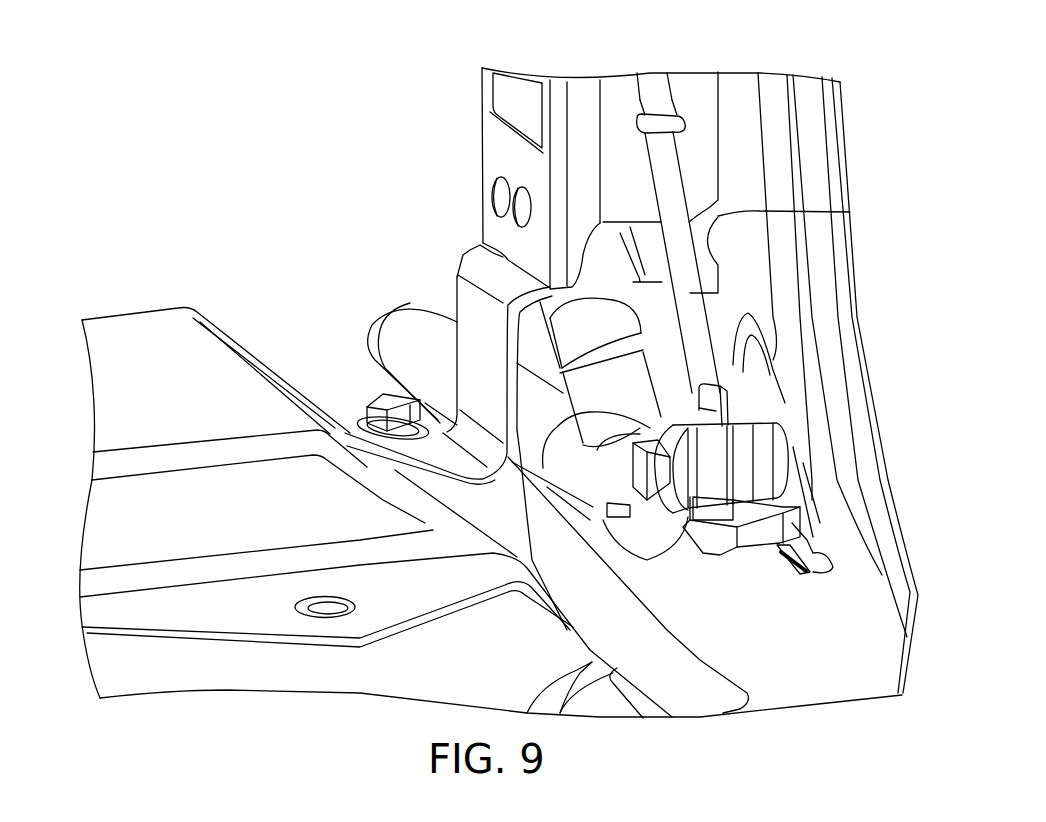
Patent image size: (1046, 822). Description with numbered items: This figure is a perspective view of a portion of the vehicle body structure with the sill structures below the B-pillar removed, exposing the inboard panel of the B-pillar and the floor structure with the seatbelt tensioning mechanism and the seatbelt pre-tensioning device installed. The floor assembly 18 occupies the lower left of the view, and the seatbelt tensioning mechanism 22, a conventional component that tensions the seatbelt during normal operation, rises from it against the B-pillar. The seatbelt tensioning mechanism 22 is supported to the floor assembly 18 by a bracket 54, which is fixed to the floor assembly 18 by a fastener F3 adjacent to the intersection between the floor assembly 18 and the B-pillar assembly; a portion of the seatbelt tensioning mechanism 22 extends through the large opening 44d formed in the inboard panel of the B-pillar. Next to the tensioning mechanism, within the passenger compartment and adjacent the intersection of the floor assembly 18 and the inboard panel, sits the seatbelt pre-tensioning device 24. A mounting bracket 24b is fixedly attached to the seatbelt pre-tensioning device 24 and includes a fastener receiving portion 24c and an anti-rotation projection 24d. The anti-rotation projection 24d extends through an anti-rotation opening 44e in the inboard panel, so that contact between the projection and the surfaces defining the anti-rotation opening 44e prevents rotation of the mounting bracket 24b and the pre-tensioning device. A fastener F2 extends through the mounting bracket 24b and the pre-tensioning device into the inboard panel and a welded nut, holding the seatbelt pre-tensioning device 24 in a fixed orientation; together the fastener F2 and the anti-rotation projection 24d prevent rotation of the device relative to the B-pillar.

The floor assembly 18 is at (143, 352).
The seatbelt tensioning mechanism 22 is at (693, 92).
The seatbelt pre-tensioning device 24 is at (403, 330).
The bracket 54 is at (480, 373).
The fastener F3 is at (387, 402).
The opening 44d is at (850, 212).
The fastener receiving portion 24c is at (753, 458).
The fastener F2 is at (637, 482).
The mounting bracket 24b is at (712, 547).
The anti-rotation projection 24d is at (763, 547).
The anti-rotation opening 44e is at (827, 563).